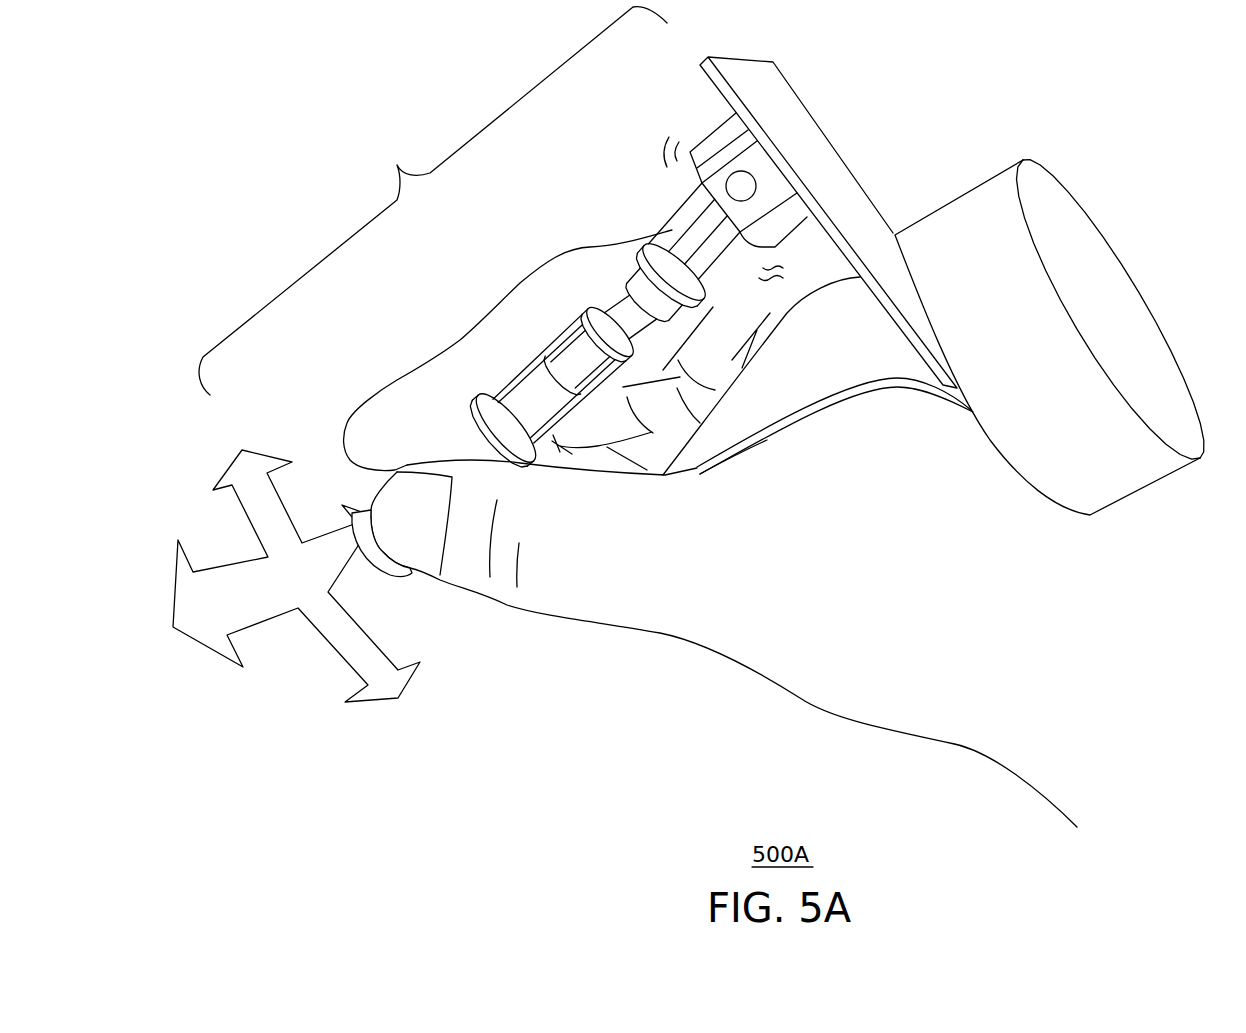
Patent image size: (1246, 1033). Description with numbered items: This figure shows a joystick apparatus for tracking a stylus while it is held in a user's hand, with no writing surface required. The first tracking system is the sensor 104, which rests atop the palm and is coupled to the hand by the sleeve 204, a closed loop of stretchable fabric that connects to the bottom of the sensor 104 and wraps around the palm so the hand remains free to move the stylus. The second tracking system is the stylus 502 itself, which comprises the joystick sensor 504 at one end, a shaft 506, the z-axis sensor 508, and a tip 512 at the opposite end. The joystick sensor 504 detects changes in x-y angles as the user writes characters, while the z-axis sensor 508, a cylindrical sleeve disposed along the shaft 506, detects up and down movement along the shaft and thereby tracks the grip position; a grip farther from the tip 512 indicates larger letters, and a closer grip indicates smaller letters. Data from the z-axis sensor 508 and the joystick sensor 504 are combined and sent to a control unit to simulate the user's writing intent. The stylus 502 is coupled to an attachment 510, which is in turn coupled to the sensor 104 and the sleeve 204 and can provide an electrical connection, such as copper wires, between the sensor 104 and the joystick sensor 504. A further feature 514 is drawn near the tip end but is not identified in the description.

The sensor 104 is at (1083, 250).
The sleeve 204 is at (860, 360).
The stylus 502 is at (433, 201).
The joystick sensor 504 is at (710, 130).
The shaft 506 is at (627, 307).
The z-axis sensor 508 is at (468, 437).
The attachment 510 is at (797, 147).
The tip 512 is at (380, 574).
The movement direction arrows 514 is at (270, 622).